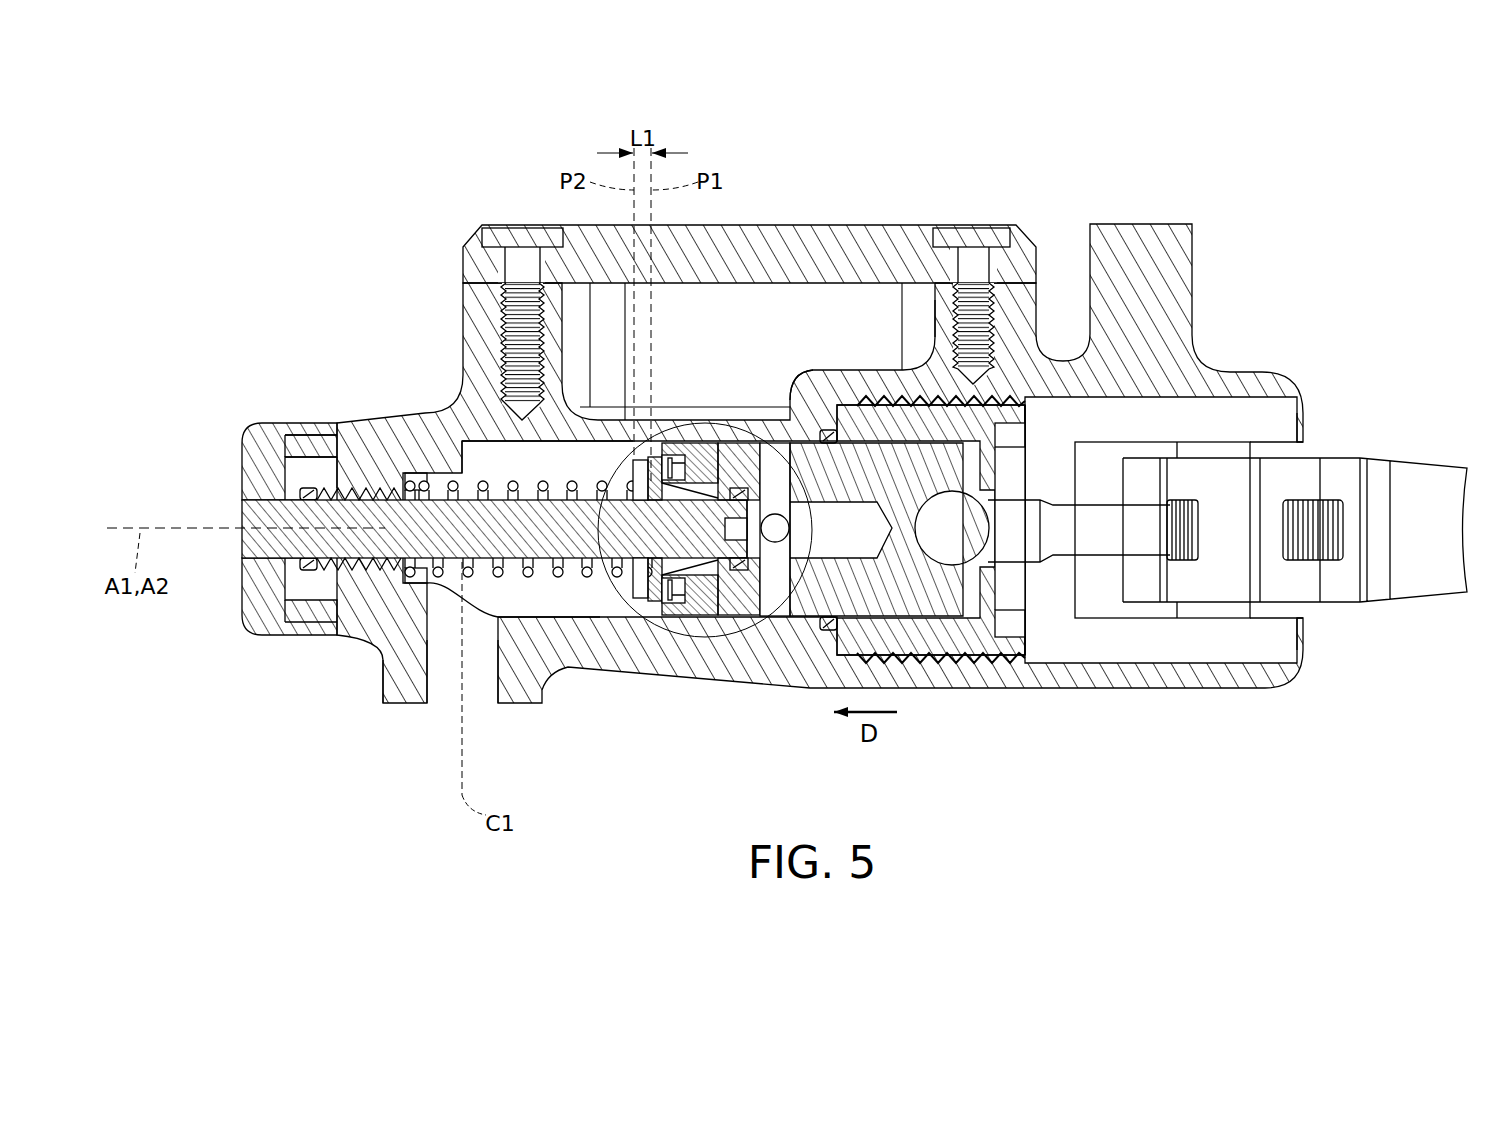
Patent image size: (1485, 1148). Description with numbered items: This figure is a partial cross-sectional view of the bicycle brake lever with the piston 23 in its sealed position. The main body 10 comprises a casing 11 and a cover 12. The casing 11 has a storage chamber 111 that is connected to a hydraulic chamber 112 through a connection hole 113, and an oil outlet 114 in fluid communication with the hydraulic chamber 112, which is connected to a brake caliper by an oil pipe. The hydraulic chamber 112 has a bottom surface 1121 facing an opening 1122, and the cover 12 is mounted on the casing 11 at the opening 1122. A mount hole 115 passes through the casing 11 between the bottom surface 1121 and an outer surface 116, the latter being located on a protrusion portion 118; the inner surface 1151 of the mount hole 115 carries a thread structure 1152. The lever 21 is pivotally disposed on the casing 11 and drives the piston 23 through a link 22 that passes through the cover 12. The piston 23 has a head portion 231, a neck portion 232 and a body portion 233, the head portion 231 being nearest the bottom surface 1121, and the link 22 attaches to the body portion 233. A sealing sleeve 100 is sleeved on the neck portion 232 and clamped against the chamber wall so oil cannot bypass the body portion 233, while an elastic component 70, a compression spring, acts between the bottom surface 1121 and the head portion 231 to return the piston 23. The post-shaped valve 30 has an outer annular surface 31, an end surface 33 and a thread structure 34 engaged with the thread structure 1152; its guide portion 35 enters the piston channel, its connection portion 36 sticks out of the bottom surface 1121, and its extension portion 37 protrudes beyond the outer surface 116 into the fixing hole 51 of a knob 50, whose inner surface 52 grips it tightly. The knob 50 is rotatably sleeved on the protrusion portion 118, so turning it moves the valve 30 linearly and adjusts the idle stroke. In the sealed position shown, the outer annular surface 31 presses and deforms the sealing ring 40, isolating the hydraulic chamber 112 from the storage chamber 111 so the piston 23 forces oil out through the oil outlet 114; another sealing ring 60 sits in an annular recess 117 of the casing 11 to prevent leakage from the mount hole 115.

The main body 10 is at (722, 481).
The casing 11 is at (933, 672).
The cover 12 is at (968, 642).
The lever 21 is at (1410, 478).
The link 22 is at (1135, 537).
The piston 23 is at (698, 619).
The valve 30 is at (582, 478).
The outer annular surface 31 is at (532, 400).
The end surface 33 is at (803, 562).
The thread structure 34 is at (334, 495).
The guide portion 35 is at (664, 447).
The connection portion 36 is at (427, 530).
The extension portion 37 is at (284, 543).
The sealing ring 40 is at (741, 445).
The knob 50 is at (251, 554).
The fixing hole 51 is at (232, 560).
The inner surface 52 is at (322, 612).
The sealing ring 60 is at (307, 572).
The elastic component 70 is at (468, 280).
The sealing sleeve 100 is at (703, 432).
The storage chamber 111 is at (836, 320).
The hydraulic chamber 112 is at (566, 592).
The connection hole 113 is at (791, 414).
The oil outlet 114 is at (445, 668).
The mount hole 115 is at (284, 567).
The outer surface 116 is at (280, 478).
The annular recess 117 is at (358, 590).
The protrusion portion 118 is at (300, 472).
The head portion 231 is at (657, 607).
The neck portion 232 is at (703, 592).
The body portion 233 is at (749, 598).
The bottom surface 1121 is at (497, 482).
The opening 1122 is at (1012, 666).
The inner surface 1151 is at (287, 503).
The thread structure 1152 is at (316, 480).